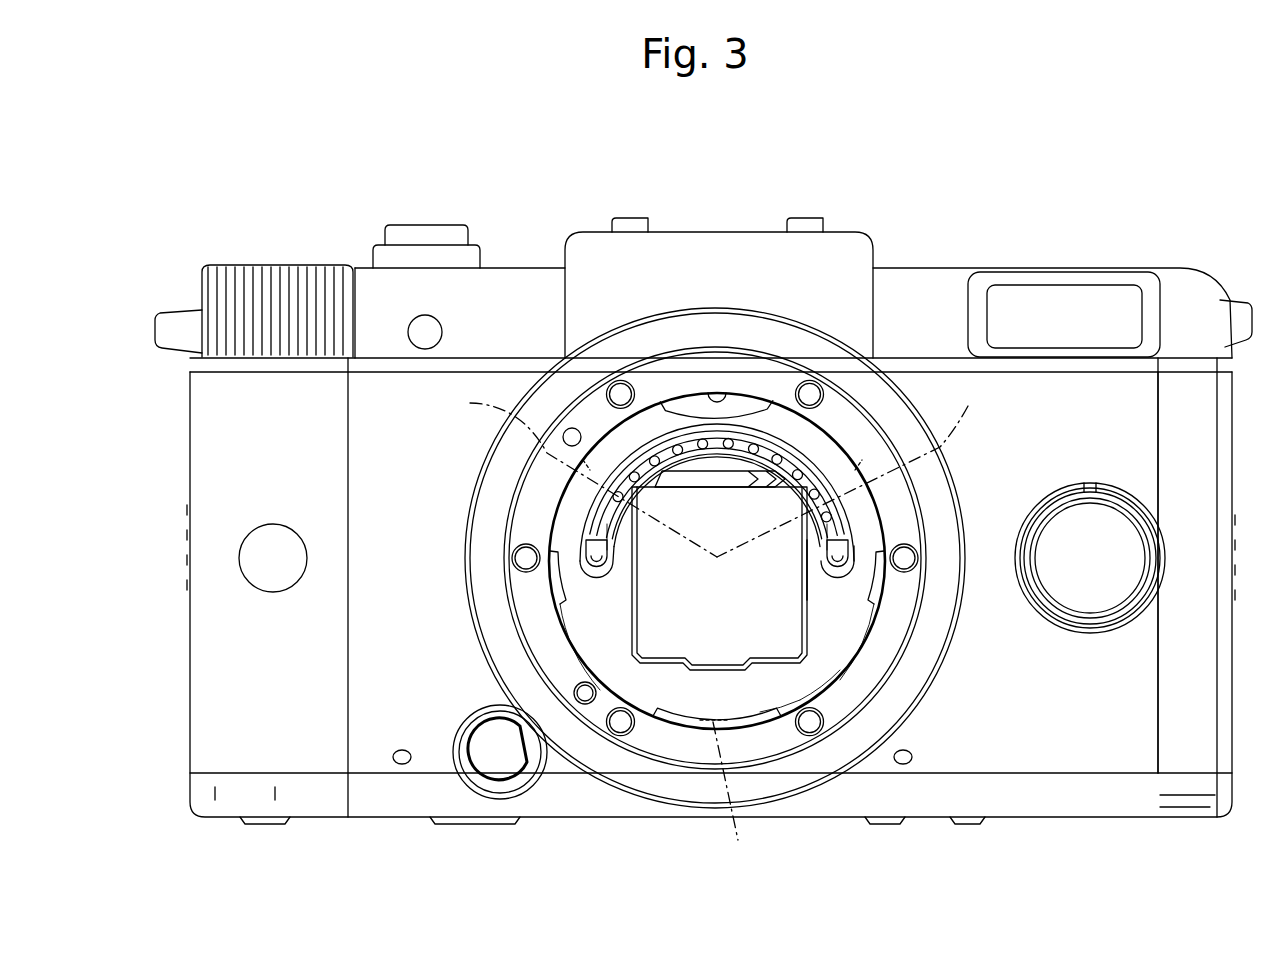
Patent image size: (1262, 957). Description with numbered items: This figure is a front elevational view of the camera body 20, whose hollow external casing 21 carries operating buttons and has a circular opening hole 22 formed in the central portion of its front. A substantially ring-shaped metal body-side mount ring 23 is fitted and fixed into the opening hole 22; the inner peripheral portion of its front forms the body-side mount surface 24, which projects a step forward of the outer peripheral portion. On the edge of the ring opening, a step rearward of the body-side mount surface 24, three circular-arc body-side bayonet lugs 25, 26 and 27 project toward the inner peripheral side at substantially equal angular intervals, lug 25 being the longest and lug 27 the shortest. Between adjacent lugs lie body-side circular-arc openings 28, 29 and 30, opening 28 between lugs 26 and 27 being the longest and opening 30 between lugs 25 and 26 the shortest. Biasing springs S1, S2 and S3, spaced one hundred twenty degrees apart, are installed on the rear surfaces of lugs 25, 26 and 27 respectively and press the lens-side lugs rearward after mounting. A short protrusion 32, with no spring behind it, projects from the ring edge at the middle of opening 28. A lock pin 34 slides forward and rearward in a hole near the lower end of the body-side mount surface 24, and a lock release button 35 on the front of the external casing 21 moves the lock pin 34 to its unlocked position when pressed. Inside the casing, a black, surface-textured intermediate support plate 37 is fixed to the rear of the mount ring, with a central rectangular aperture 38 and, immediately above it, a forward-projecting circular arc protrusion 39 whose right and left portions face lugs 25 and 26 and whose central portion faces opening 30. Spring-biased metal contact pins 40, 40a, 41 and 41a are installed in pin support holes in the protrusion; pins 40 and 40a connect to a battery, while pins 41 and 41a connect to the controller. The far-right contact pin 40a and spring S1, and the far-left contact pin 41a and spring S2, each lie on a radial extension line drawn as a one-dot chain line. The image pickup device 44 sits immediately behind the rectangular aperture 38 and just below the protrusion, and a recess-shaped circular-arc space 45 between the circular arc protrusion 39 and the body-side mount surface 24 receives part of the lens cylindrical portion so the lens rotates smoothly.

The camera body 20 is at (1068, 186).
The external casing 21 is at (950, 390).
The opening hole 22 is at (933, 452).
The body-side mount ring 23 is at (940, 632).
The body-side mount surface 24 is at (905, 672).
The body-side bayonet lug 25 is at (878, 505).
The body-side bayonet lug 26 is at (562, 510).
The body-side bayonet lug 27 is at (822, 680).
The body-side circular-arc opening 28 is at (575, 616).
The body-side circular-arc opening 29 is at (823, 675).
The body-side circular-arc opening 30 is at (714, 398).
The protrusion 32 is at (572, 648).
The lock pin 34 is at (587, 706).
The lock release button 35 is at (512, 768).
The intermediate support plate 37 is at (885, 652).
The central rectangular aperture 38 is at (810, 588).
The circular arc protrusion 39 is at (744, 440).
The contact pin 40 is at (812, 500).
The contact pin 40a is at (803, 551).
The contact pin 41 is at (618, 502).
The contact pin 41a is at (696, 505).
The image pickup device 44 is at (655, 593).
The recess-shaped circular-arc space 45 is at (625, 445).
The biasing spring S1 is at (871, 472).
The biasing spring S2 is at (575, 473).
The biasing spring S3 is at (732, 801).